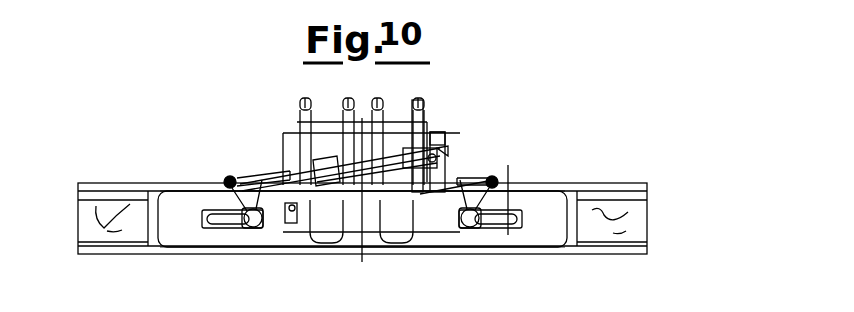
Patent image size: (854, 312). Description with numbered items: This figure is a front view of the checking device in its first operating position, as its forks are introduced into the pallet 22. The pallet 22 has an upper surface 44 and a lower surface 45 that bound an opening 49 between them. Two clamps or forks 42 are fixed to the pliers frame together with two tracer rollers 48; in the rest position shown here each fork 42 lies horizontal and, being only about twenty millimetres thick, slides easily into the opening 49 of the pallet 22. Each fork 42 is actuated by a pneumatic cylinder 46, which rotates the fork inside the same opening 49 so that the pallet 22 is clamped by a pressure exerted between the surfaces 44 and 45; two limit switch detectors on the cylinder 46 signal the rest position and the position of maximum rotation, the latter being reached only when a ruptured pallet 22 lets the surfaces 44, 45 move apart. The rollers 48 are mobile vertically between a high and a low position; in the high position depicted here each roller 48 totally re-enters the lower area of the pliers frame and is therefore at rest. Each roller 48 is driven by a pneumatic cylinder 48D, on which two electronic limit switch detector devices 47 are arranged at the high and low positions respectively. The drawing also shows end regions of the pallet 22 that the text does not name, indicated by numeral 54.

The pallet 22 is at (632, 223).
The fork 42 is at (217, 218).
The upper surface 44 is at (610, 185).
The lower surface 45 is at (577, 252).
The pneumatic cylinder 46 is at (413, 150).
The electronic limit switch detector device 47 is at (350, 148).
The tracer roller 48 is at (337, 247).
The pneumatic cylinder 48D is at (297, 122).
The opening 49 is at (552, 210).
The end panel 54 is at (85, 225).